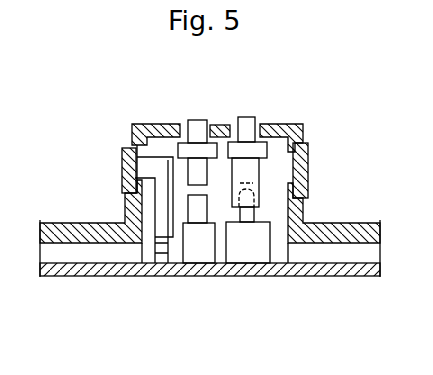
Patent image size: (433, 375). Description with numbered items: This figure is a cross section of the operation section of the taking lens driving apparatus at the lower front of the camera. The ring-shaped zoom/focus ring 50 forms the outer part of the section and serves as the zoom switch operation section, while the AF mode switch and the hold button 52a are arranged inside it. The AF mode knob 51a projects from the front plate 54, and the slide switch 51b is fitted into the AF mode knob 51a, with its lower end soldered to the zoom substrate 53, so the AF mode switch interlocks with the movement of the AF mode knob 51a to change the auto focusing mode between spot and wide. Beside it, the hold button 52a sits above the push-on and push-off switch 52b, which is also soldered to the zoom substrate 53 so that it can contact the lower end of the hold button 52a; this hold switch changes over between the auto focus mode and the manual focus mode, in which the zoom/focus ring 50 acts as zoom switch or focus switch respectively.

The zoom/focus ring 50 is at (124, 160).
The AF mode knob 51a is at (246, 117).
The slide switch 51b is at (252, 257).
The hold button 52a is at (193, 120).
The push-on and push-off switch 52b is at (197, 255).
The zoom substrate 53 is at (90, 277).
The front plate 54 is at (298, 122).